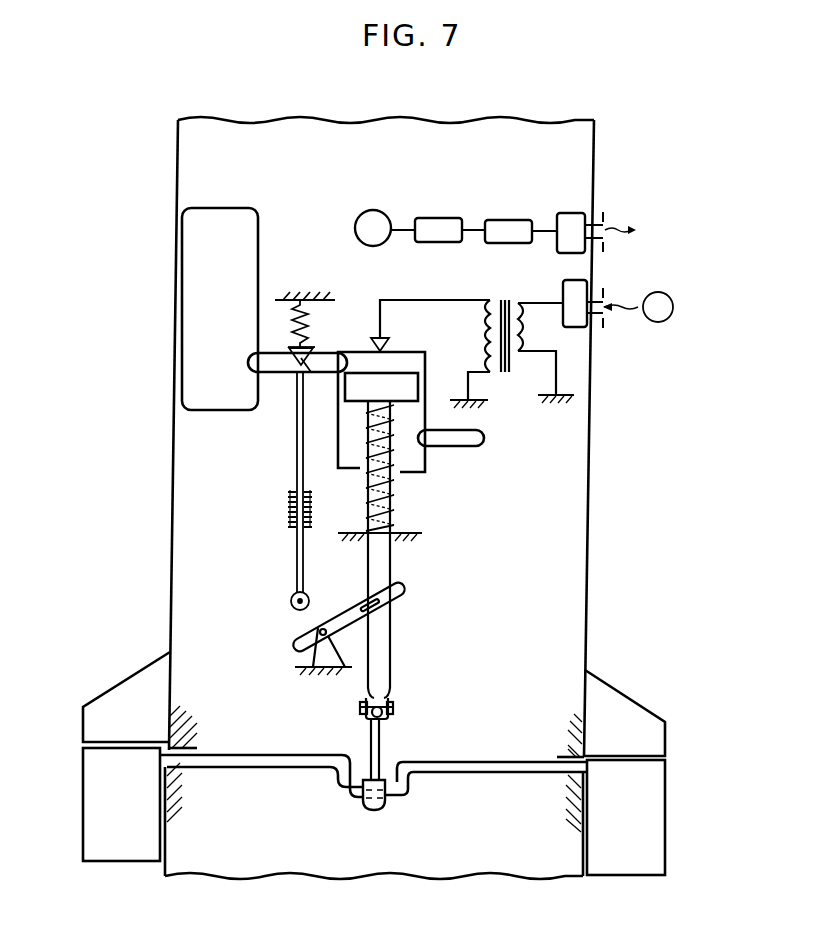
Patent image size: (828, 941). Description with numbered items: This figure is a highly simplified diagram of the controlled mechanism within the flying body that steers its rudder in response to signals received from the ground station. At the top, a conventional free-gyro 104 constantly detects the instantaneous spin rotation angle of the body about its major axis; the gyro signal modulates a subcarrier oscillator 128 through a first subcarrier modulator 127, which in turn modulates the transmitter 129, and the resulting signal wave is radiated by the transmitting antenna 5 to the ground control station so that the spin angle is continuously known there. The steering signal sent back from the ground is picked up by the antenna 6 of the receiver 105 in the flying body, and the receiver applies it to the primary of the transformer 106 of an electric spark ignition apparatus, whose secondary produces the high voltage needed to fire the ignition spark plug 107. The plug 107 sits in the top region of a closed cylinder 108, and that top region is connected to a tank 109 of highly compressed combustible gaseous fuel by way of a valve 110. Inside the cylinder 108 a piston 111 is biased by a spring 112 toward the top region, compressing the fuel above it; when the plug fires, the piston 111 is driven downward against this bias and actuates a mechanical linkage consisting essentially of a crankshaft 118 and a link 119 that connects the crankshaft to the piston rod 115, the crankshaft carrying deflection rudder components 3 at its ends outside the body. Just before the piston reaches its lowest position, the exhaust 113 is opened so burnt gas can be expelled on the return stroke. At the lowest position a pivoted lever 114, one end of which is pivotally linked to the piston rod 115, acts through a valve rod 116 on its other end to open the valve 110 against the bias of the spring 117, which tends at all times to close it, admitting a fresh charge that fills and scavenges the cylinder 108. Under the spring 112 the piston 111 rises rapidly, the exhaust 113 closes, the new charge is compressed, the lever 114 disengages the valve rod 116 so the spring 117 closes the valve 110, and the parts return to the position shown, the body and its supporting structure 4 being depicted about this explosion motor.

The deflection rudder components 3 is at (84, 795).
The sloped support block 4 is at (126, 690).
The transmitting antenna 5 is at (604, 214).
The antenna 6 is at (602, 323).
The free-gyro 104 is at (378, 210).
The receiver 105 is at (562, 284).
The transformer 106 is at (503, 300).
The ignition spark plug 107 is at (389, 347).
The closed cylinder 108 is at (425, 470).
The tank 109 is at (250, 240).
The valve 110 is at (294, 370).
The piston 111 is at (418, 382).
The spring 112 is at (392, 506).
The exhaust 113 is at (484, 438).
The pivoted lever 114 is at (350, 615).
The piston rod 115 is at (391, 560).
The valve rod 116 is at (296, 432).
The spring 117 is at (310, 312).
The crankshaft 118 is at (398, 793).
The link 119 is at (380, 736).
The first subcarrier modulator 127 is at (434, 218).
The subcarrier oscillator 128 is at (490, 220).
The transmitter 129 is at (578, 213).